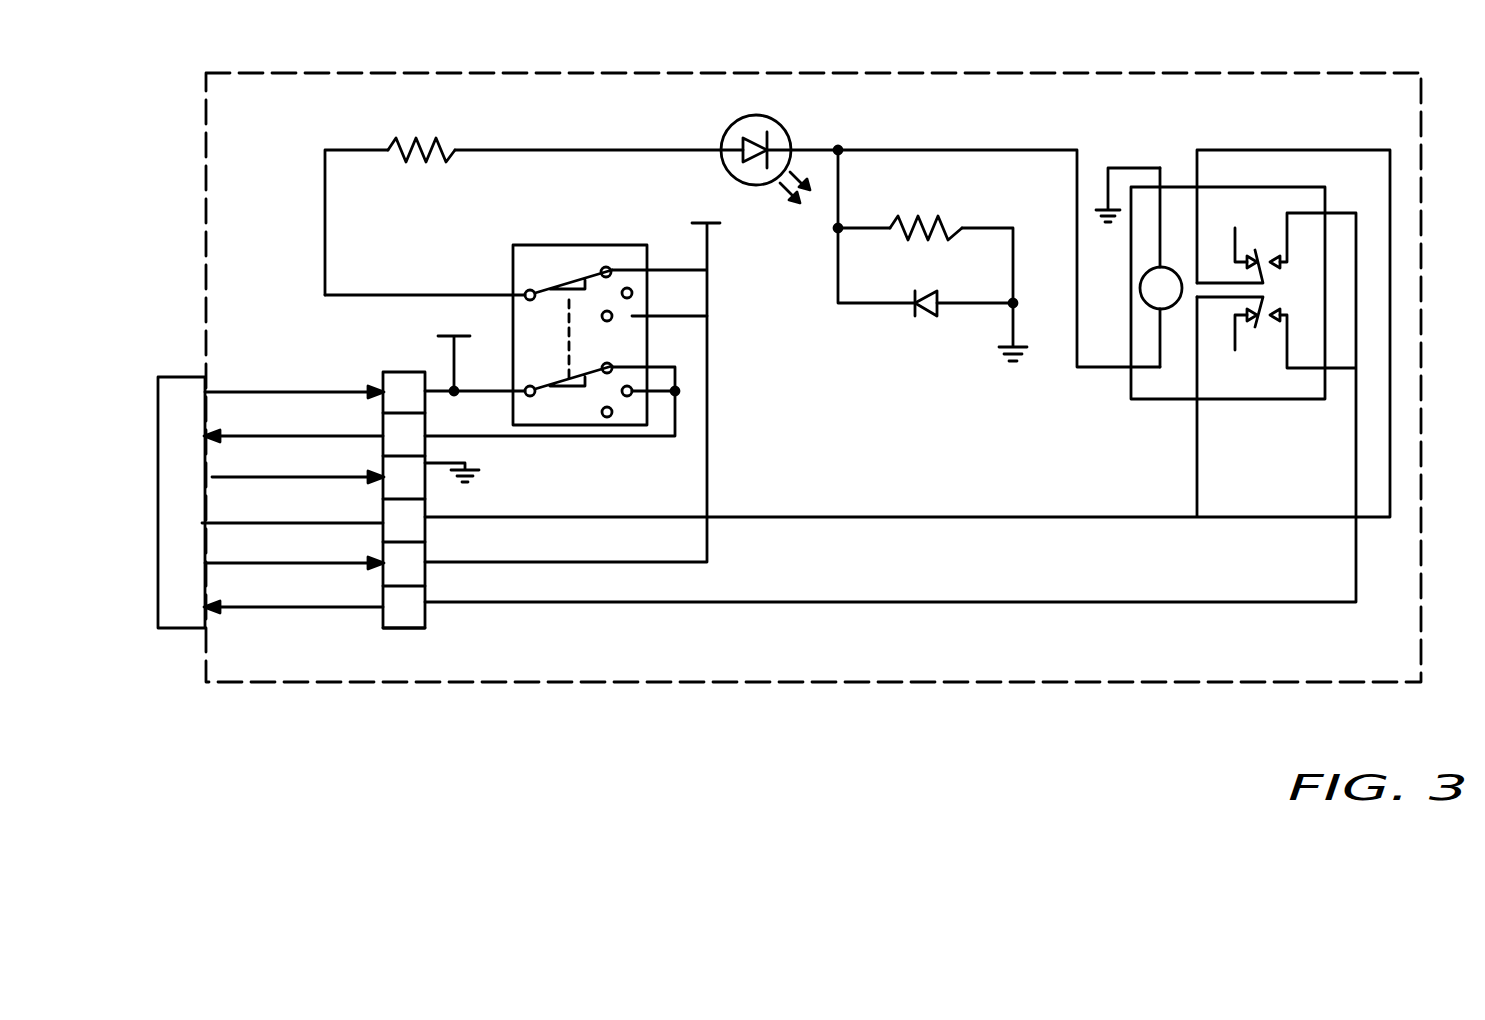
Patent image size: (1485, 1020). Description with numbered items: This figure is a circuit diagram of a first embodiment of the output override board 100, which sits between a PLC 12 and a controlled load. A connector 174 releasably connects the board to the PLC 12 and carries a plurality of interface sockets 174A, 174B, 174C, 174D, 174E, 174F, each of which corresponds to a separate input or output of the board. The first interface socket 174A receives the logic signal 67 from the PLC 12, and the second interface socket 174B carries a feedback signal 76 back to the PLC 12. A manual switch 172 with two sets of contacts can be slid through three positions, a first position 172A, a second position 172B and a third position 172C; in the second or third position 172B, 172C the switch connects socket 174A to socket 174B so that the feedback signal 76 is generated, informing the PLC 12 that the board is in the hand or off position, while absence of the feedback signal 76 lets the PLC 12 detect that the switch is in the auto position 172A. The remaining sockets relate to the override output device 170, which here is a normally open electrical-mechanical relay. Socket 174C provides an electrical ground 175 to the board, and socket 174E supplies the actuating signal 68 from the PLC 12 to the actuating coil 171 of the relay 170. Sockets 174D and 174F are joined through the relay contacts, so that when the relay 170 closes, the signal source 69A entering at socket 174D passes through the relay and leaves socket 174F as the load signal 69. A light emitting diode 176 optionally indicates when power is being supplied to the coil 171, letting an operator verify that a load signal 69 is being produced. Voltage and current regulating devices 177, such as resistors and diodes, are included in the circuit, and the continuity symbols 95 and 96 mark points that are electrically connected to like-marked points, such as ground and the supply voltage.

The output override board 100 is at (350, 62).
The PLC 12 is at (187, 583).
The logic signal 67 is at (240, 390).
The feedback signal 76 is at (237, 438).
The electrical ground 175 is at (218, 479).
The signal source 69A is at (218, 525).
The actuating signal 68 is at (222, 566).
The load signal 69 is at (236, 610).
The connector 174 is at (411, 636).
The first interface socket 174A is at (386, 380).
The second interface socket 174B is at (392, 428).
The interface socket 174C is at (388, 468).
The interface socket 174D is at (390, 510).
The interface socket 174E is at (390, 555).
The interface socket 174F is at (390, 598).
The manual switch 172 is at (636, 244).
The first switch position 172A is at (612, 319).
The second switch position 172B is at (603, 267).
The third switch position 172C is at (632, 294).
The voltage and current regulating devices 177 is at (428, 147).
The light emitting diode 176 is at (783, 118).
The circuit continuity symbol 96 is at (702, 187).
The circuit continuity symbol 95 is at (480, 478).
The override output device 170 is at (1175, 187).
The actuating coil 171 is at (1148, 307).